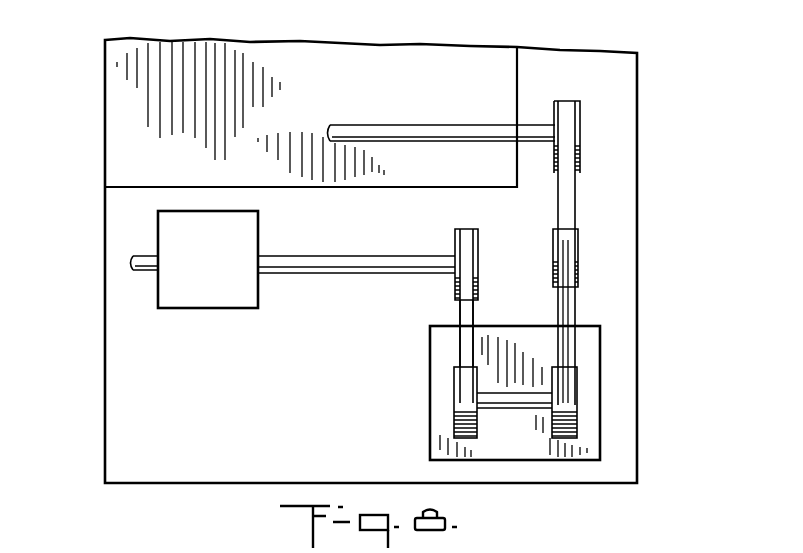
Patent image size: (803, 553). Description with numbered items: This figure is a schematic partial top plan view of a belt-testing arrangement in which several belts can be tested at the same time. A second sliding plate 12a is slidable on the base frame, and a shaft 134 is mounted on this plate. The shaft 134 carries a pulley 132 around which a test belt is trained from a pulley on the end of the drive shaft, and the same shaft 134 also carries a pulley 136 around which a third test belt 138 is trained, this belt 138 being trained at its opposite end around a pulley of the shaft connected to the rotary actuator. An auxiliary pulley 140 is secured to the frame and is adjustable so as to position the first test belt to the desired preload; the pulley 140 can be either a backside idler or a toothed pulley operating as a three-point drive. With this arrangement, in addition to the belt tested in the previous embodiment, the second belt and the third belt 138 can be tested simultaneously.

The second sliding plate 12a is at (590, 450).
The pulley 132 is at (577, 402).
The shaft 134 is at (515, 408).
The pulley 136 is at (455, 380).
The test belt 138 is at (460, 350).
The auxiliary pulley 140 is at (578, 258).